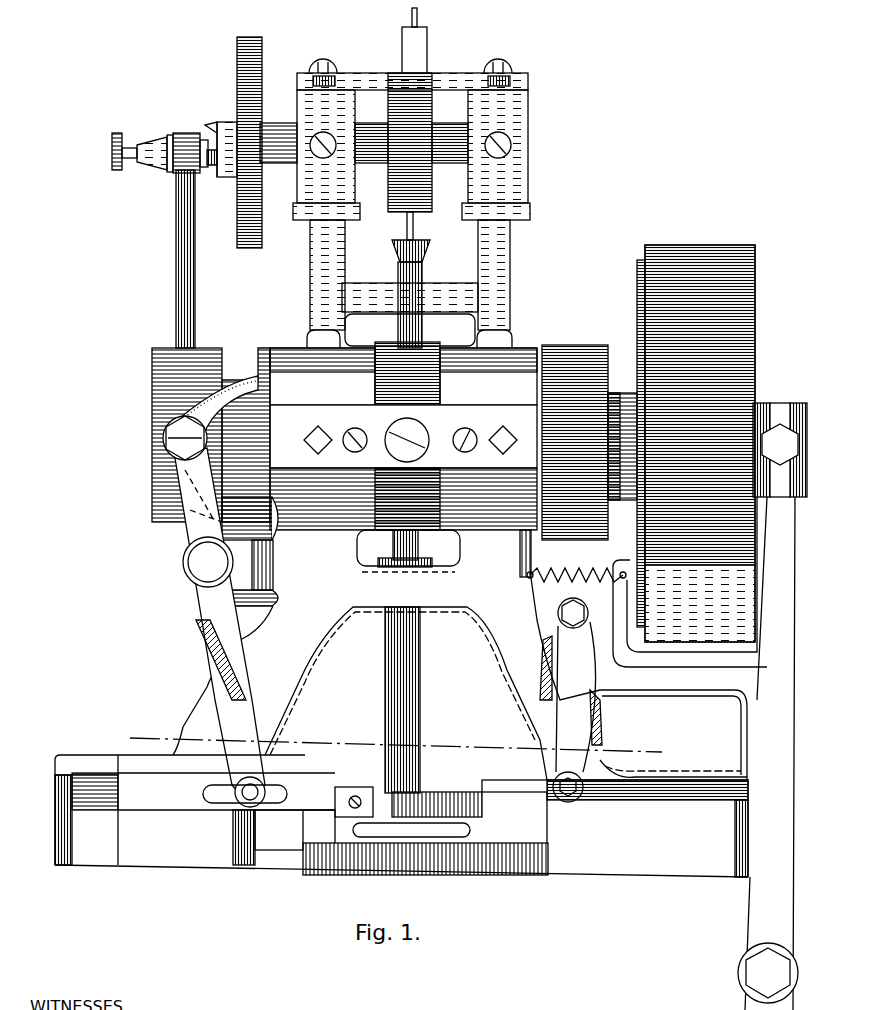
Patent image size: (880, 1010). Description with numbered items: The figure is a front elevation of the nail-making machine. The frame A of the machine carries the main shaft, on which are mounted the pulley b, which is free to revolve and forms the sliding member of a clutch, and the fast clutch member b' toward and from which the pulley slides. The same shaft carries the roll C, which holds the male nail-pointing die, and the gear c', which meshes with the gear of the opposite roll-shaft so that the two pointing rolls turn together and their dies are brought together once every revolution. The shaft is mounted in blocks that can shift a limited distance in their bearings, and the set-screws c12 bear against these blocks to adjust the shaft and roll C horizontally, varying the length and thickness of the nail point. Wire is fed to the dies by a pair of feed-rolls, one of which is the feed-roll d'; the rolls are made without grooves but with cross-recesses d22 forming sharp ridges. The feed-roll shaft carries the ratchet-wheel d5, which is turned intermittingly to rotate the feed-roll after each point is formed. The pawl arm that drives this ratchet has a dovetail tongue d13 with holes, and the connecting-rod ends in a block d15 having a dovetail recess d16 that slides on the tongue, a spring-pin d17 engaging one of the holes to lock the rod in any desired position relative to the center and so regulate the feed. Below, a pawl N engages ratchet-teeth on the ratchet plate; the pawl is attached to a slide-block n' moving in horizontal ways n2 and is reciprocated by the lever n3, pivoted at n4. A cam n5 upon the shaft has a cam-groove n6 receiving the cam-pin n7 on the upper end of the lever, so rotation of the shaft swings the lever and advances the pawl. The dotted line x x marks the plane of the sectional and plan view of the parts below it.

The ratchet-wheel d5 is at (247, 52).
The cross-recesses d22 is at (428, 80).
The block d15 is at (197, 133).
The dovetail tongue d13 is at (214, 130).
The dovetail recess d16 is at (213, 172).
The spring-pin d17 is at (130, 160).
The feed-roll d' is at (396, 242).
The pulley b is at (700, 428).
The fast member of the clutch b' is at (628, 435).
The gear c' is at (575, 428).
The roll C is at (420, 408).
The set-screws c12 is at (314, 440).
The cam-groove n6 is at (237, 372).
The cam-pin n7 is at (185, 438).
The cam n5 is at (158, 492).
The pivot n4 is at (200, 566).
The lever n3 is at (219, 627).
The frame of the machine A is at (205, 718).
The dotted line x x is at (395, 745).
The horizontal ways n2 is at (68, 788).
The slide-block n' is at (226, 791).
The pawl N is at (460, 873).